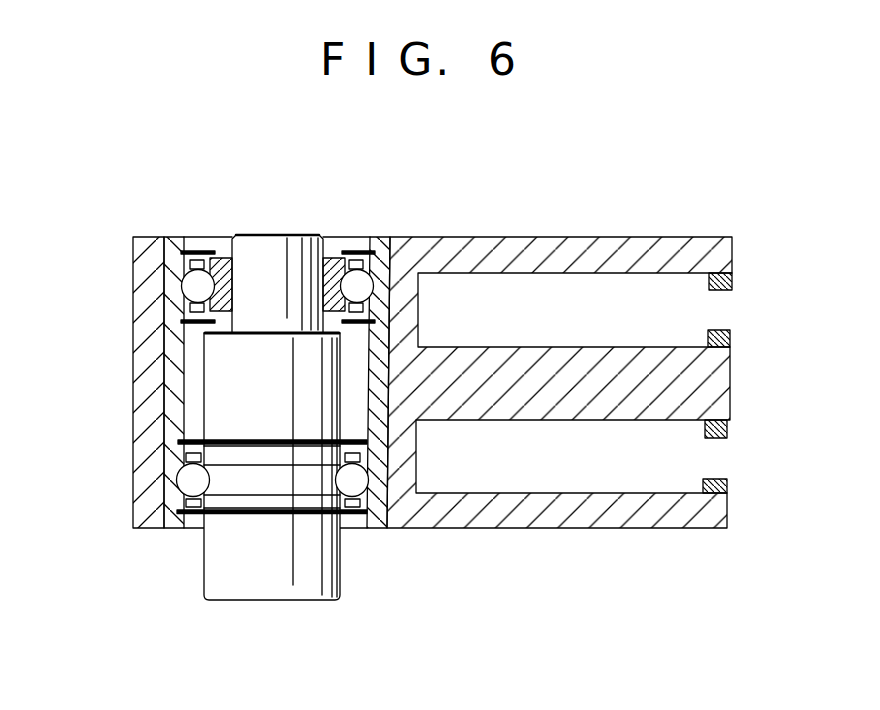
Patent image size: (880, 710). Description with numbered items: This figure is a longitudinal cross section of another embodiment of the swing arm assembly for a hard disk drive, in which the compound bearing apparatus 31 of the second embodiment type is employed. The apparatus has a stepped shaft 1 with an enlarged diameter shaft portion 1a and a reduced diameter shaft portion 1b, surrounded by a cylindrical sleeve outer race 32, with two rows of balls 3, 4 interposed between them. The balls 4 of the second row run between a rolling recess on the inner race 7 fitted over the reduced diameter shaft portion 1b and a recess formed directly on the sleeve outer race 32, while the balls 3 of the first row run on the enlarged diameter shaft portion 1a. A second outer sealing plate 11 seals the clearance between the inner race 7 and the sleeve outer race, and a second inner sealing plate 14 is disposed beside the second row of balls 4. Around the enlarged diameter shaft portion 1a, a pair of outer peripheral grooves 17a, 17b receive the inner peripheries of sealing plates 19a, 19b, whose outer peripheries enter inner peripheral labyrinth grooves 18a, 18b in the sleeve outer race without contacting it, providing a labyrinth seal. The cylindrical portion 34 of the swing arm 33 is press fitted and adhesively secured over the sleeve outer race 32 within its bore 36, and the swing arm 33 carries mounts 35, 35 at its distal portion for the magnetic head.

The stepped shaft 1 is at (300, 422).
The enlarged diameter shaft portion 1a is at (263, 587).
The reduced diameter shaft portion 1b is at (275, 252).
The balls 3 is at (192, 477).
The balls 4 is at (196, 283).
The inner race 7 is at (337, 266).
The second outer sealing plate 11 is at (358, 250).
The second inner sealing plate 14 is at (195, 330).
The outer peripheral groove 17a is at (250, 520).
The outer peripheral groove 17b is at (255, 437).
The inner peripheral labyrinth groove 18a is at (178, 512).
The inner peripheral labyrinth groove 18b is at (190, 442).
The sealing plate 19a is at (191, 525).
The sealing plate 19b is at (191, 439).
The compound bearing apparatus 31 is at (380, 210).
The sleeve outer race 32 is at (383, 242).
The swing arm 33 is at (602, 245).
The cylindrical portion 34 is at (148, 243).
The mounts 35 is at (733, 281).
The bore 36 is at (184, 247).